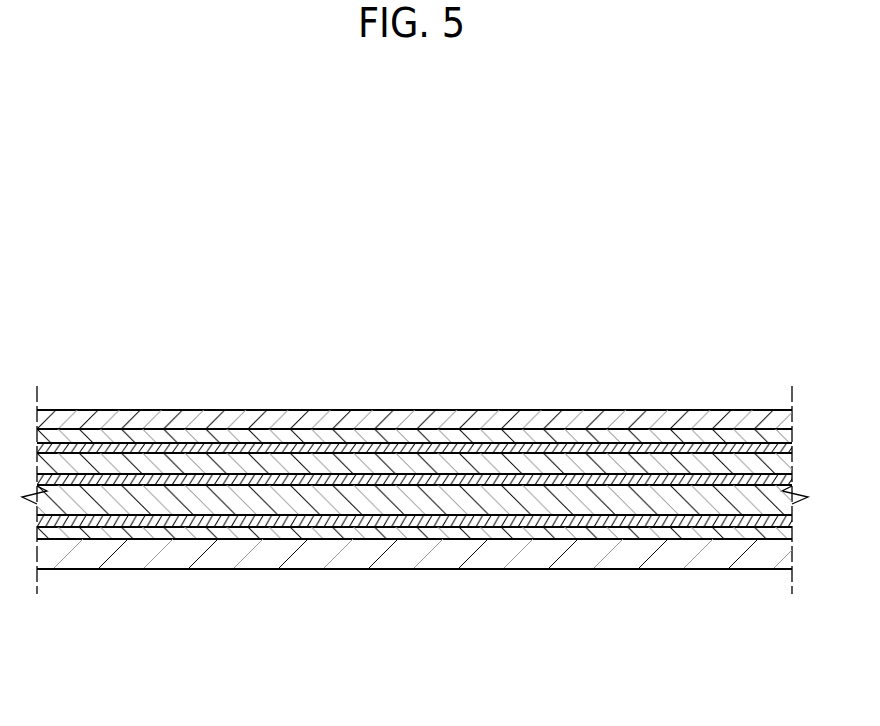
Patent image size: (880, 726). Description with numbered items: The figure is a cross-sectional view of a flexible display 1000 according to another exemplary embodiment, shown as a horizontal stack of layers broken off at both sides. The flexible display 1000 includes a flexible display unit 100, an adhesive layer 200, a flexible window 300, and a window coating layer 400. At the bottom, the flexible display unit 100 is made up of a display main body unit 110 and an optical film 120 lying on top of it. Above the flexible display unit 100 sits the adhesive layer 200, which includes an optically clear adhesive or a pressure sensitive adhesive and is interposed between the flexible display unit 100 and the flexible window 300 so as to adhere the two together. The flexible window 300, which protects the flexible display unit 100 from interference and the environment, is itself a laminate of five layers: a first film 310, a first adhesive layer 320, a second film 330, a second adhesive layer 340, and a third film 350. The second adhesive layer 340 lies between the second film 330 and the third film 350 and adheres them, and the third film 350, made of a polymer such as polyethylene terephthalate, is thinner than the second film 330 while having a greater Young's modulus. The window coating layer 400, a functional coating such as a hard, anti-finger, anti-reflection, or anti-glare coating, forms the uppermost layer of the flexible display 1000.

The flexible display 1000 is at (188, 260).
The window coating layer 400 is at (237, 420).
The flexible window 300 is at (688, 356).
The third film 350 is at (383, 435).
The second adhesive layer 340 is at (457, 449).
The second film 330 is at (527, 462).
The first adhesive layer 320 is at (598, 481).
The first film 310 is at (669, 500).
The adhesive layer 200 is at (325, 520).
The flexible display unit 100 is at (620, 644).
The optical film 120 is at (512, 535).
The display main body unit 110 is at (600, 555).